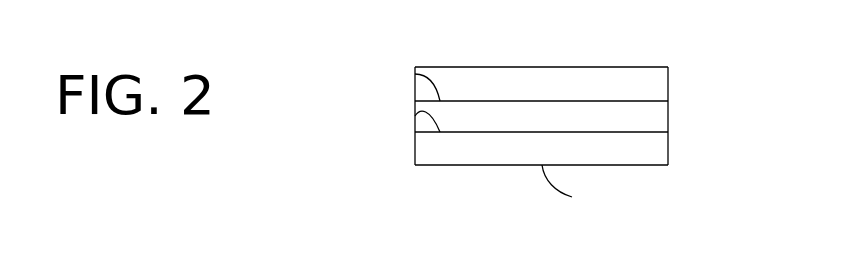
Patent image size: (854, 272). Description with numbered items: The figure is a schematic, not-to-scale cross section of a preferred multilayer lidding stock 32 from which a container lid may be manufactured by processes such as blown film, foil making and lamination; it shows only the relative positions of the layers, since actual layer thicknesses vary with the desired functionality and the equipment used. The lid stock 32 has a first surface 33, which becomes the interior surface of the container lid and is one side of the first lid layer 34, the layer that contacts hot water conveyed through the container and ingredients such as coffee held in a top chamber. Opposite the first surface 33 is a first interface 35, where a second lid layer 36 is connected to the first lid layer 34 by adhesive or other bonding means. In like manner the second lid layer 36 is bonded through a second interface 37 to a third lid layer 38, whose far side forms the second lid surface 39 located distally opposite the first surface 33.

The multilayer lidding stock 32 is at (350, 122).
The first surface 33 is at (542, 67).
The first lid layer 34 is at (647, 87).
The first interface 35 is at (413, 76).
The second lid layer 36 is at (647, 118).
The second interface 37 is at (413, 116).
The third lid layer 38 is at (647, 150).
The second lid surface 39 is at (574, 190).